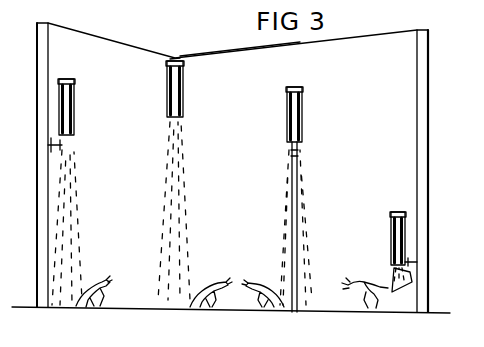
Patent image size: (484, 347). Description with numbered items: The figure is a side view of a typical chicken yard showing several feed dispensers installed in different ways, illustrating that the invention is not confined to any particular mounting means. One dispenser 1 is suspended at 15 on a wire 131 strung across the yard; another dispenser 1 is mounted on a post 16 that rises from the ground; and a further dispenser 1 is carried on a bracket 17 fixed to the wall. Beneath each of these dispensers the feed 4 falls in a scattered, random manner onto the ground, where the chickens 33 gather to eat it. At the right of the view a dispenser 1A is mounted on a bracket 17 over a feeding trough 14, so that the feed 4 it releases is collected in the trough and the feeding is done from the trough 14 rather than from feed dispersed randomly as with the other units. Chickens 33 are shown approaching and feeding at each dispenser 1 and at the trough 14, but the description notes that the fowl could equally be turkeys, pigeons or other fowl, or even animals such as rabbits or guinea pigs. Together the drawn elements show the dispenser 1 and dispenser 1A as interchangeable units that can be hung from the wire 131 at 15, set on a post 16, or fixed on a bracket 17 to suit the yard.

The dispenser 1 is at (74, 98).
The dispenser 1A is at (391, 230).
The dispensed liquid spray 4 is at (70, 207).
The feeding trough 14 is at (412, 290).
The suspension point 15 is at (176, 58).
The post 16 is at (298, 188).
The bracket 17 is at (66, 152).
The chickens 33 is at (124, 264).
The wire 131 is at (343, 40).